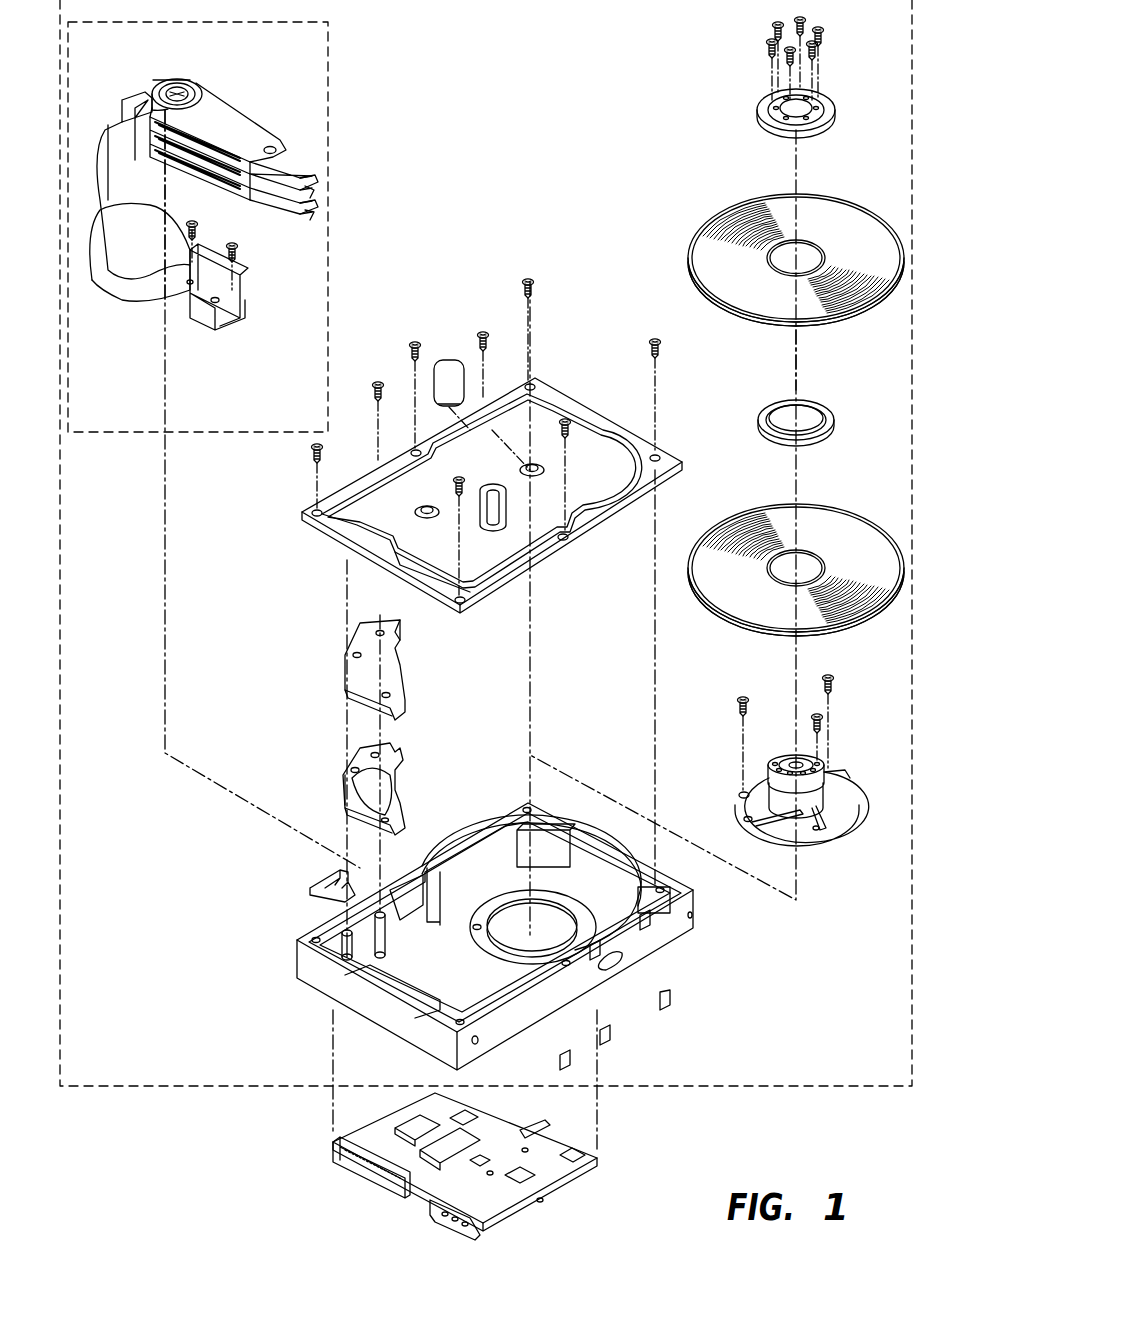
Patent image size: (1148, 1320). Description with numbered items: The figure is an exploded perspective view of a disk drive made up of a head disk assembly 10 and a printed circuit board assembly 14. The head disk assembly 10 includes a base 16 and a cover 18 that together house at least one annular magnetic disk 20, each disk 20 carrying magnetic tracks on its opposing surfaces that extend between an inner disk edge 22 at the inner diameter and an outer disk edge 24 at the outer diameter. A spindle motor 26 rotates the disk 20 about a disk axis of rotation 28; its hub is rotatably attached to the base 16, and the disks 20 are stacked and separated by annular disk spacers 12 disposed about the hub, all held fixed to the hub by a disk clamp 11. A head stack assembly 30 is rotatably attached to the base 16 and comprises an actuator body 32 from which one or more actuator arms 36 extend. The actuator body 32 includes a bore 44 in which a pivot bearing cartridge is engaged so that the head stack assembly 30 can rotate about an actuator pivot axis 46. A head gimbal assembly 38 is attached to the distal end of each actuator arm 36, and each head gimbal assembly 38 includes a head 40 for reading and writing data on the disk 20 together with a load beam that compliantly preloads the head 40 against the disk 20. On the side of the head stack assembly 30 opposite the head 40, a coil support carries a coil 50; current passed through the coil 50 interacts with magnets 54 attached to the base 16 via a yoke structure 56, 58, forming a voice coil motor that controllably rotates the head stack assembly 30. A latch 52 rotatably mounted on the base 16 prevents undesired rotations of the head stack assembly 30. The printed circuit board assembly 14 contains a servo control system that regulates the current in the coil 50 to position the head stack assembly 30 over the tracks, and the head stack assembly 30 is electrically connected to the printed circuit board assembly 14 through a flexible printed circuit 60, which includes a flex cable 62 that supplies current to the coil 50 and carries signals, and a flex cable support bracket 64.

The head disk assembly 10 is at (700, 1087).
The disk clamp 11 is at (825, 92).
The annular disk spacer 12 is at (755, 425).
The printed circuit board assembly 14 is at (572, 1180).
The base 16 is at (635, 975).
The cover 18 is at (548, 385).
The annular magnetic disk 20 is at (850, 212).
The inner disk edge 22 is at (825, 250).
The outer disk edge 24 is at (735, 315).
The spindle motor 26 is at (840, 822).
The disk axis of rotation 28 is at (805, 350).
The head stack assembly 30 is at (240, 432).
The actuator body 32 is at (207, 139).
The actuator arm 36 is at (225, 108).
The head gimbal assembly 38 is at (290, 168).
The head 40 is at (305, 196).
The bore 44 is at (182, 80).
The actuator pivot axis 46 is at (163, 630).
The coil 50 is at (140, 92).
The latch 52 is at (310, 893).
The magnet 54 is at (395, 768).
The yoke structure 56 is at (340, 785).
The yoke structure 58 is at (340, 665).
The flexible printed circuit 60 is at (127, 160).
The flex cable 62 is at (130, 270).
The flex cable support bracket 64 is at (248, 325).